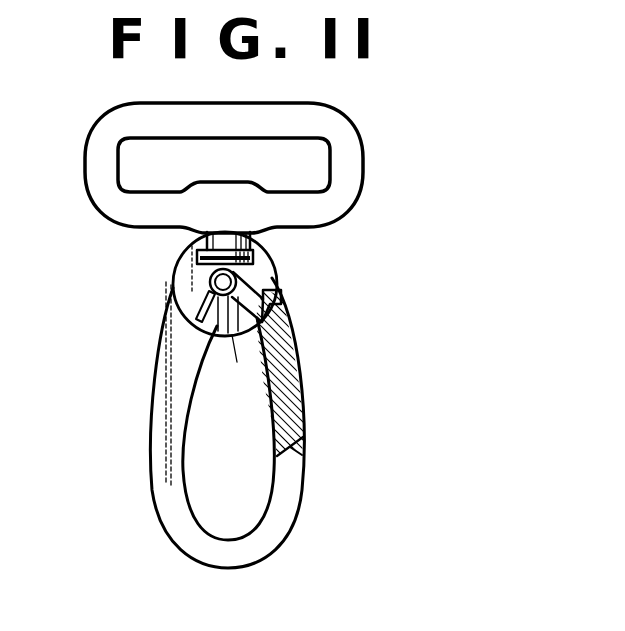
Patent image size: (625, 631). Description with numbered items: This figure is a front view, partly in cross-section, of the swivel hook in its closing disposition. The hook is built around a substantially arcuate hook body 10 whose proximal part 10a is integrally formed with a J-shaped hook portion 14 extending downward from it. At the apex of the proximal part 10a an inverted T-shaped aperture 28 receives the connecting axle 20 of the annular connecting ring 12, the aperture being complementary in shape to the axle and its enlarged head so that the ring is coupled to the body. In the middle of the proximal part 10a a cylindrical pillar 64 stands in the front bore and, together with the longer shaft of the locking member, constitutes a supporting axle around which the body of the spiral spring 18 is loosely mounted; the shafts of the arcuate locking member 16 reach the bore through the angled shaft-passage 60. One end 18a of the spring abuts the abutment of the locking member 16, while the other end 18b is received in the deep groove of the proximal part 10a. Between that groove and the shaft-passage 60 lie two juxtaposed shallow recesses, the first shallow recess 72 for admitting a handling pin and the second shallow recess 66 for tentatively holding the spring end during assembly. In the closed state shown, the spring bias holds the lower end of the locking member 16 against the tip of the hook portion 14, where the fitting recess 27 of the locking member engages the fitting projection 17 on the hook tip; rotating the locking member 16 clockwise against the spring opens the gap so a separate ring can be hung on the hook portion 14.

The hook body 10 is at (239, 423).
The proximal part 10a is at (183, 266).
The connecting ring 12 is at (372, 124).
The J-shaped hook portion 14 is at (158, 490).
The locking member 16 is at (292, 378).
The fitting projection 17 is at (300, 462).
The spiral spring 18 is at (178, 294).
The end of the spiral spring 18a is at (283, 300).
The other end of the spiral spring 18b is at (182, 313).
The connecting axle 20 is at (200, 239).
The fitting recess 27 is at (300, 430).
The inverted T-shaped aperture 28 is at (262, 238).
The shaft-passage 60 is at (270, 322).
The cylindrical pillar 64 is at (240, 282).
The second shallow recess 66 is at (248, 330).
The first shallow recess 72 is at (210, 338).